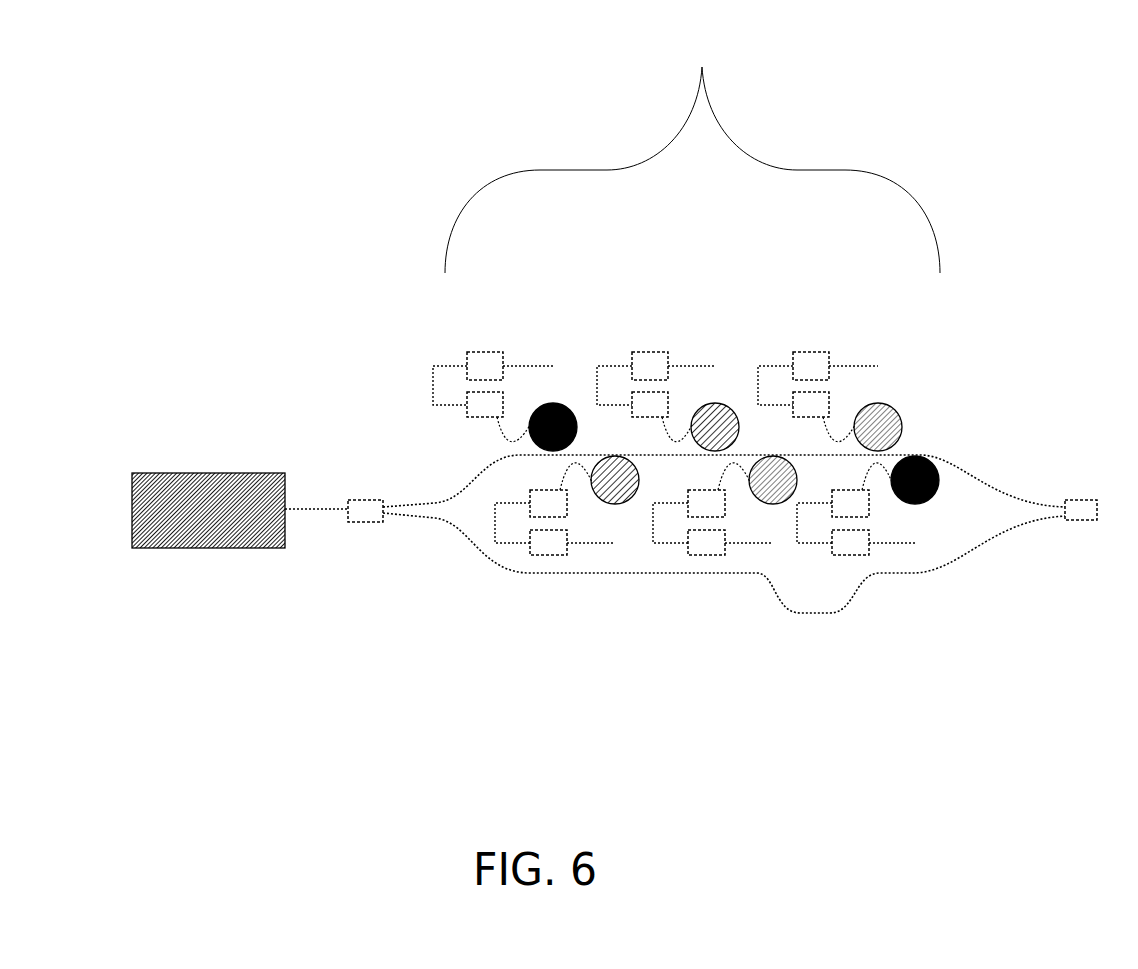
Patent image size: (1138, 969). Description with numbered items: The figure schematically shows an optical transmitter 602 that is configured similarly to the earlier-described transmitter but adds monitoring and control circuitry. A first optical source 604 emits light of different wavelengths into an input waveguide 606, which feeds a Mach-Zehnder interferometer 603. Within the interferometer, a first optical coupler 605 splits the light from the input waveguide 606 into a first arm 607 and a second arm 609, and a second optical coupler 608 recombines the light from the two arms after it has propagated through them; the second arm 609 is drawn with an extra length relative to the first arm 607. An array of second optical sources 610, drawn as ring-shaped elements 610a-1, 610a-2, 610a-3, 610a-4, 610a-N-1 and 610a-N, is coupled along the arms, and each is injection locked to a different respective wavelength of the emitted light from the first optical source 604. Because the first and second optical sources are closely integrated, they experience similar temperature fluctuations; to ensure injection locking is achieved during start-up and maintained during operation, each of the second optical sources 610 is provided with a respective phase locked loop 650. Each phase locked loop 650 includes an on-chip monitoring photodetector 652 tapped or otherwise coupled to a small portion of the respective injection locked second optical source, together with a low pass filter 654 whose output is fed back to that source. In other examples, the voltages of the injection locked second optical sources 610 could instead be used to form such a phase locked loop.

The optical transmitter 602 is at (601, 411).
The Mach-Zehnder interferometer 603 is at (687, 527).
The light source (laser) 604 is at (228, 519).
The input coupler/splitter 605 is at (360, 520).
The input waveguide 606 is at (310, 507).
The first arm waveguide 607 is at (448, 499).
The output coupler/combiner 608 is at (1081, 520).
The second arm waveguide 609 is at (458, 533).
The second optical sources 610 is at (630, 340).
The ring modulator 610a-1 is at (587, 334).
The ring modulator 610a-2 is at (615, 512).
The ring modulator 610a-3 is at (715, 395).
The ring modulator 610a-4 is at (773, 512).
The ring modulator 610a-N-1 is at (935, 334).
The ring modulator 610a-N is at (915, 512).
The phase locked loop 650 is at (431, 318).
The photodetector 652 is at (462, 390).
The low pass filter 654 is at (488, 350).